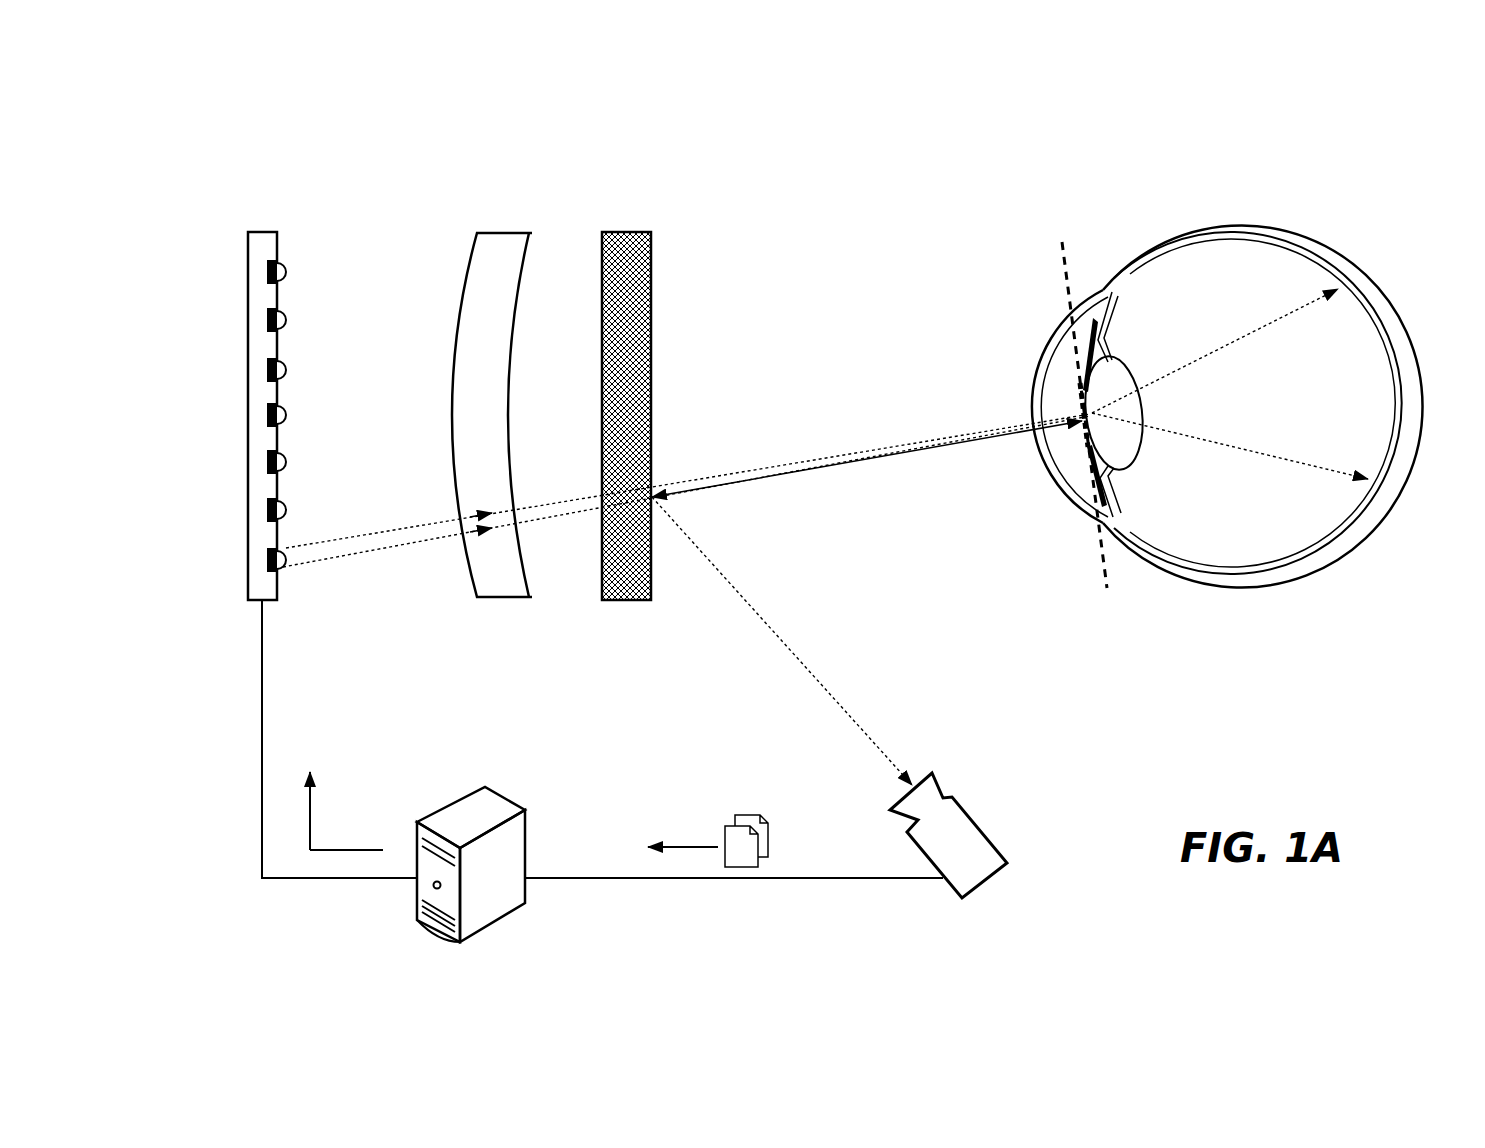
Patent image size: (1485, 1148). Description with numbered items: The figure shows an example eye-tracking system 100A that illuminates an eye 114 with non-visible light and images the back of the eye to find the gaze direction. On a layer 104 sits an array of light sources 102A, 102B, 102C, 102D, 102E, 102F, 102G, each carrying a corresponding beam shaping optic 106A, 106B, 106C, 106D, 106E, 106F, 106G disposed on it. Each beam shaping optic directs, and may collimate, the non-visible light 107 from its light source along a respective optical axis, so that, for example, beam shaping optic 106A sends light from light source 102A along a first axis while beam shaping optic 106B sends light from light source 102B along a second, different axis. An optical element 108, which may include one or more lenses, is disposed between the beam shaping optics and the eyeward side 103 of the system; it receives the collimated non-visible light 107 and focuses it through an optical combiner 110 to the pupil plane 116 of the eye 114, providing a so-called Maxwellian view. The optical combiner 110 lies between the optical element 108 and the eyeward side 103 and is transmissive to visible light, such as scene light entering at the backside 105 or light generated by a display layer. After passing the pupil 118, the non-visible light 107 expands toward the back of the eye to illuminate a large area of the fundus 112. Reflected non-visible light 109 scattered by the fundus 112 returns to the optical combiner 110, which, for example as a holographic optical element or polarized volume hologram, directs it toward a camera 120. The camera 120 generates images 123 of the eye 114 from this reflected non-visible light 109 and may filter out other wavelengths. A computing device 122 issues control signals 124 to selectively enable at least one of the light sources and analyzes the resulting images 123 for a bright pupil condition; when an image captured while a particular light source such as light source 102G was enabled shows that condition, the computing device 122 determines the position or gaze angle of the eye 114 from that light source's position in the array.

The eye-tracking system 100A is at (1393, 131).
The light source 102A is at (267, 272).
The light source 102B is at (267, 320).
The light source 102C is at (267, 370).
The light source 102D is at (267, 415).
The light source 102E is at (267, 462).
The light source 102F is at (267, 510).
The light source 102G is at (267, 560).
The eyeward side 103 is at (702, 281).
The layer 104 is at (267, 237).
The backside 105 is at (142, 236).
The beam shaping optic 106A is at (285, 267).
The beam shaping optic 106B is at (285, 315).
The beam shaping optic 106C is at (285, 365).
The beam shaping optic 106D is at (285, 410).
The beam shaping optic 106E is at (285, 457).
The beam shaping optic 106F is at (285, 505).
The beam shaping optic 106G is at (285, 554).
The non-visible light 107 is at (750, 470).
The optical element 108 is at (501, 238).
The reflected non-visible light 109 is at (796, 655).
The optical combiner 110 is at (632, 232).
The fundus 112 is at (1372, 437).
The eye 114 is at (1228, 227).
The pupil plane 116 is at (1062, 242).
The pupil 118 is at (1082, 390).
The camera 120 is at (978, 826).
The computing device 122 is at (512, 800).
The images 123 is at (748, 815).
The control signals 124 is at (325, 845).